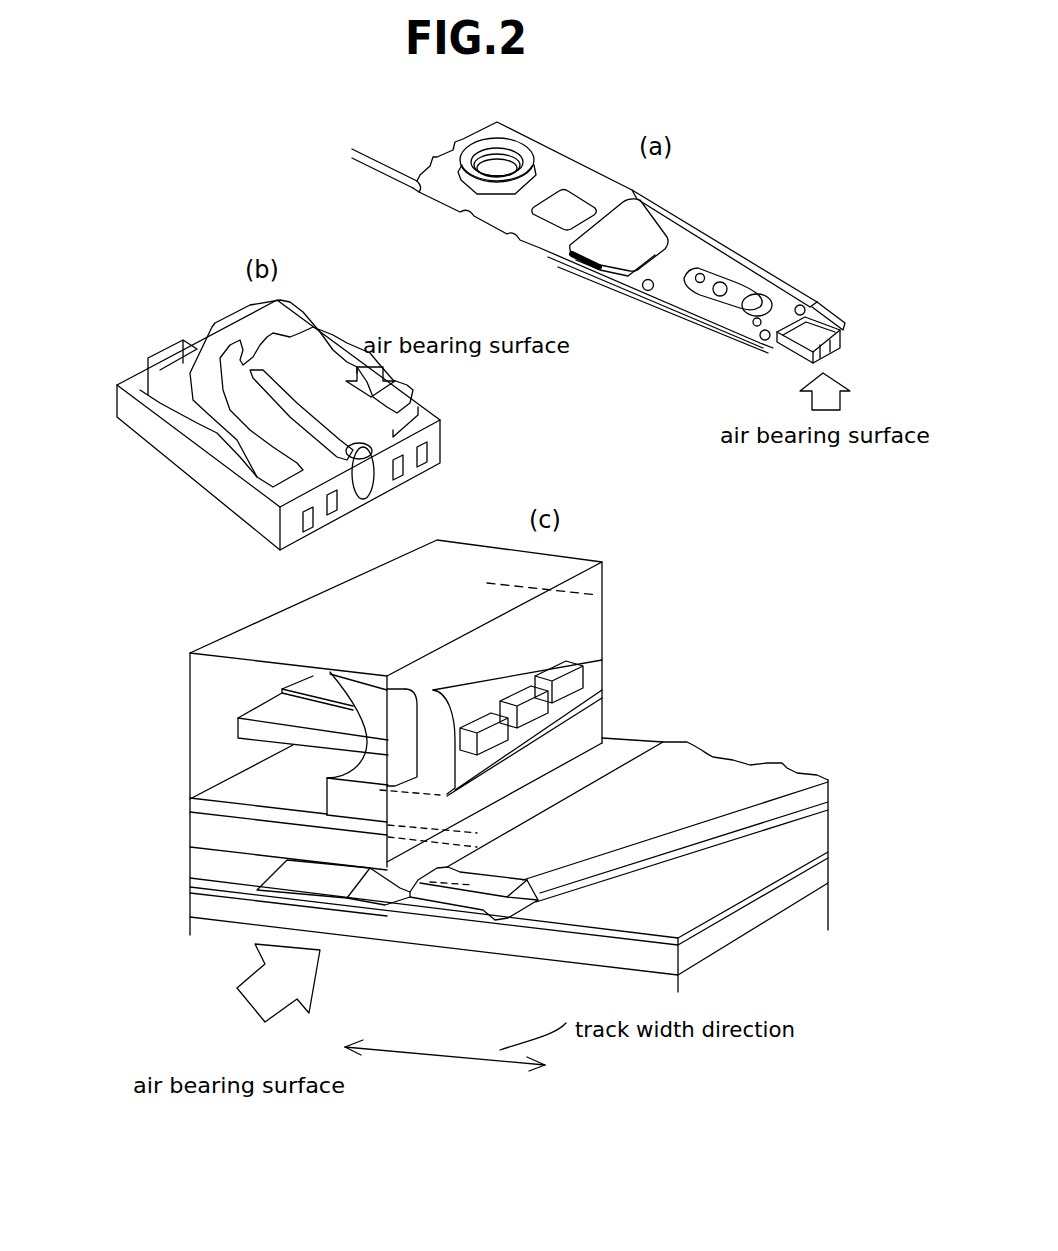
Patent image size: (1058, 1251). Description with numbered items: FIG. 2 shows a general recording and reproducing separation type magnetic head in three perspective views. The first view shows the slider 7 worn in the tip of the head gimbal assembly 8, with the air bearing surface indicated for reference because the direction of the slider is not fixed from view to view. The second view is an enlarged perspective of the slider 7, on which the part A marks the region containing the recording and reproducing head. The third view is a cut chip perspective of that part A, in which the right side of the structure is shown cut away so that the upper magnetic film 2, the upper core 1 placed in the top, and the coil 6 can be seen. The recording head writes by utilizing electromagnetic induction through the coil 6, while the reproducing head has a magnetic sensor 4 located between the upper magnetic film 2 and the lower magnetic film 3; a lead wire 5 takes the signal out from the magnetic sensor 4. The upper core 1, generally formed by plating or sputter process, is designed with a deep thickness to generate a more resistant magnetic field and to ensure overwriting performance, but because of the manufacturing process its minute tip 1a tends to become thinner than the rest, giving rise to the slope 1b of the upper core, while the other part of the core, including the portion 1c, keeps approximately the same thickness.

The upper core 1 is at (583, 640).
The upper core tip 1a is at (326, 797).
The slope of upper core 1b is at (395, 718).
The yoke top portion 1c is at (540, 625).
The upper magnetic film 2 is at (237, 836).
The lower magnetic film 3 is at (331, 918).
The magnetic sensor 4 is at (405, 916).
The lead wire 5 is at (488, 920).
The coil 6 is at (590, 683).
The slider 7 is at (813, 337).
The head gimbal assembly 8 is at (687, 248).
The A part A is at (383, 463).